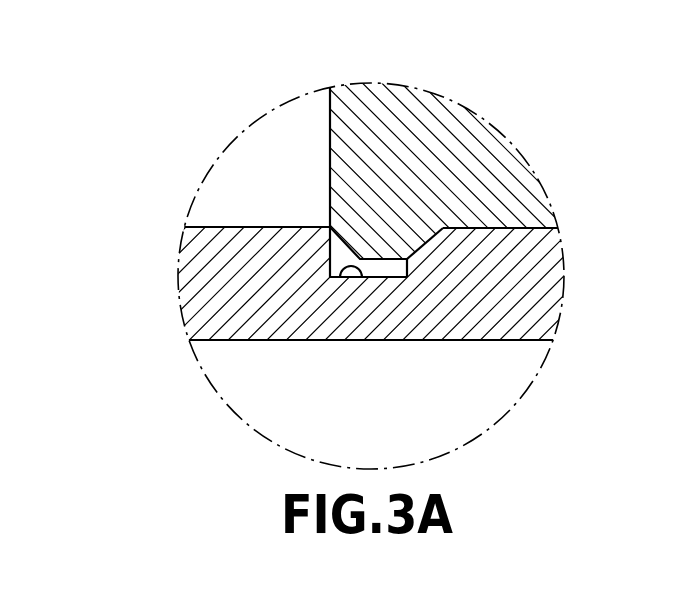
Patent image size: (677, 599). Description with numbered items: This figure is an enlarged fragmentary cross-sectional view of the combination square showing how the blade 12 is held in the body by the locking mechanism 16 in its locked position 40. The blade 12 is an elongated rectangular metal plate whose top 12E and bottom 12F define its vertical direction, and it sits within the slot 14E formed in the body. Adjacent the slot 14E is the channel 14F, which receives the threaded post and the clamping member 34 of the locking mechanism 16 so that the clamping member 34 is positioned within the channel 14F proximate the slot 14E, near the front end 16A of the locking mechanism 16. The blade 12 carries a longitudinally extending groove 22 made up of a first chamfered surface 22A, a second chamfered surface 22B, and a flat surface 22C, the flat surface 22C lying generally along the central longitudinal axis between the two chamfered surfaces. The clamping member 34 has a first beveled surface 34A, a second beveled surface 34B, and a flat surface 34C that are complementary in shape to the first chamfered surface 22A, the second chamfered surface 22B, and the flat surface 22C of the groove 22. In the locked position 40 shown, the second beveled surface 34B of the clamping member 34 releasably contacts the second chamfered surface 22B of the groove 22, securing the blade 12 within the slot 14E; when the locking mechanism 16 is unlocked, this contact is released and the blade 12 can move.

The blade 12 is at (548, 304).
The top 12E is at (507, 228).
The bottom 12F is at (260, 342).
The slot 14E is at (510, 340).
The channel 14F is at (348, 447).
The locking mechanism 16 is at (433, 149).
The locked position 40 is at (413, 149).
The front end 16A is at (326, 135).
The groove 22 is at (345, 252).
The first chamfered surface 22A is at (324, 248).
The second chamfered surface 22B is at (428, 230).
The flat surface 22C is at (328, 277).
The clamping member 34 is at (364, 277).
The first beveled surface 34A is at (332, 264).
The second beveled surface 34B is at (420, 248).
The flat surface 34C is at (383, 264).